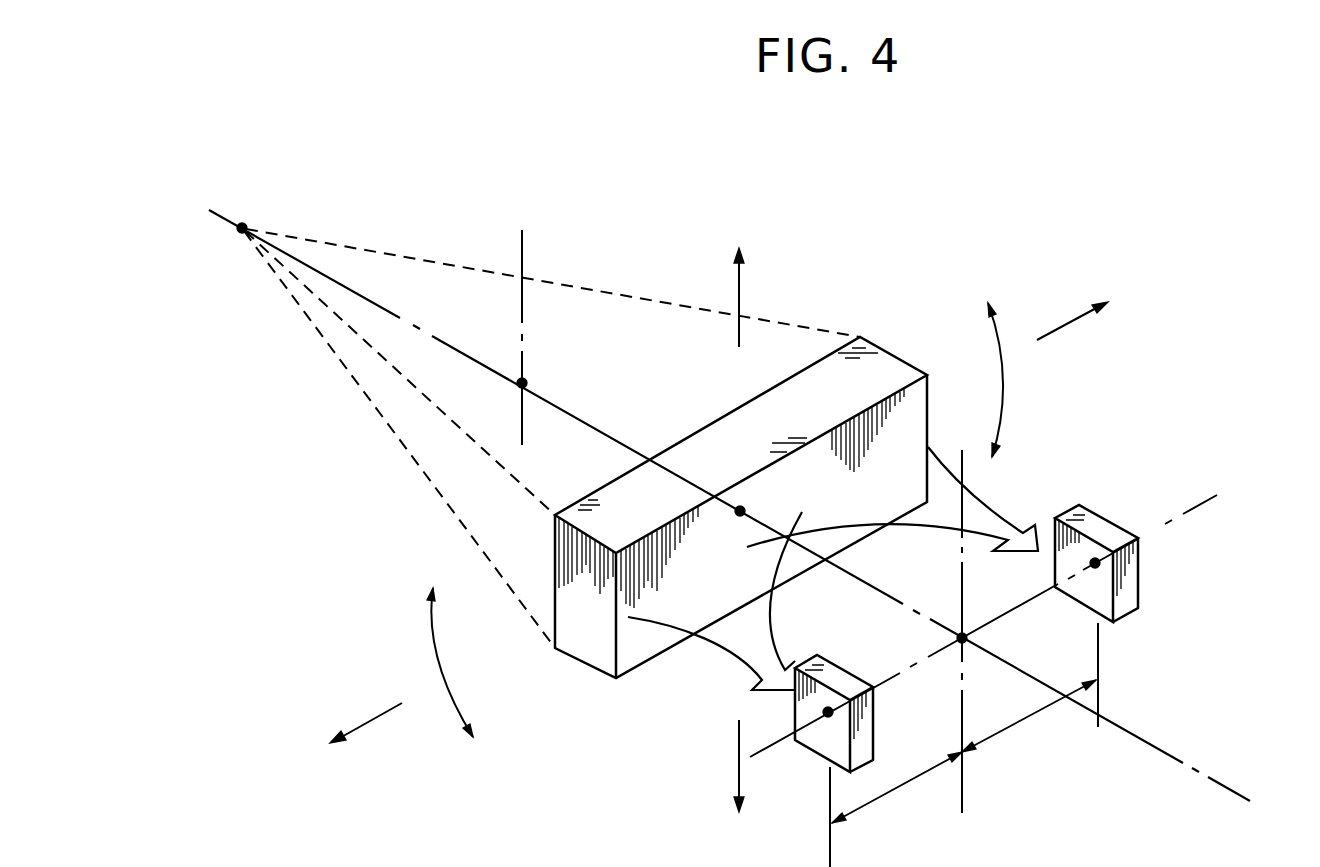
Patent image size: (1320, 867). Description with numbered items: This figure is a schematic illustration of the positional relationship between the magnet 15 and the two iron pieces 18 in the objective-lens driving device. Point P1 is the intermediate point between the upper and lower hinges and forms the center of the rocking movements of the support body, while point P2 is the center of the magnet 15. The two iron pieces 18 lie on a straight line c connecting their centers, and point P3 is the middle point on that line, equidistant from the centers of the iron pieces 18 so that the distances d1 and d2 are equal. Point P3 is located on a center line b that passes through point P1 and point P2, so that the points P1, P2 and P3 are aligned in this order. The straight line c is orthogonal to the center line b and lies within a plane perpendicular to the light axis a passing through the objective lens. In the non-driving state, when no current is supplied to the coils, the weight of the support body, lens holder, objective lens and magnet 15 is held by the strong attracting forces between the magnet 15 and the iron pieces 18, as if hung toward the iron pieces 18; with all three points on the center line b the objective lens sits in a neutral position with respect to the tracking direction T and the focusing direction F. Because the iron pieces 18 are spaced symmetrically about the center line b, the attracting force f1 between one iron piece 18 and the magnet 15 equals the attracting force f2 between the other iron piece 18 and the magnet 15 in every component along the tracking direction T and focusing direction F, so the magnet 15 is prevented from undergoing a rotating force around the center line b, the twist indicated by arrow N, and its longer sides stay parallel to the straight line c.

The magnet 15 is at (832, 357).
The iron pieces 18 is at (815, 743).
The intermediate point between the upper and lower hinges P1 is at (244, 226).
The center of the magnet P2 is at (740, 511).
The middle point between the centers of the iron pieces P3 is at (953, 638).
The light axis a is at (522, 245).
The center line b is at (1227, 783).
The straight line connecting the centers of the iron pieces c is at (1205, 500).
The attracting force f1 is at (727, 643).
The attracting force f2 is at (982, 522).
The distance from point P3 to the center of one iron piece d1 is at (897, 795).
The distance from point P3 to the center of the other iron piece d2 is at (1029, 722).
The focusing direction F is at (736, 533).
The tracking direction T is at (716, 518).
The twist N is at (715, 520).